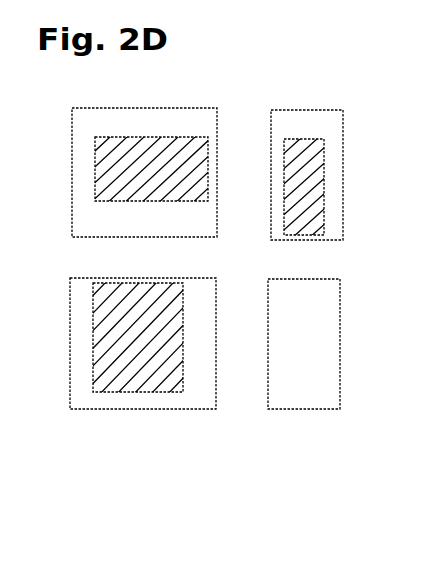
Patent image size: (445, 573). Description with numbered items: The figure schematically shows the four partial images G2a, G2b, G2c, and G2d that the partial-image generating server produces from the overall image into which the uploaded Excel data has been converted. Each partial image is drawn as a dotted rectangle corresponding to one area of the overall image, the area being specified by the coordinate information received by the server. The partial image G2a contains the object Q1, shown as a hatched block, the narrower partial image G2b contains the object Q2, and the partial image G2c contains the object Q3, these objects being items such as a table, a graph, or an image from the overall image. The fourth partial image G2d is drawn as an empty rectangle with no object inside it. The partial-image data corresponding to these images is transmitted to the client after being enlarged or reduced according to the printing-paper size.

The partial image G2a is at (160, 108).
The partial image G2b is at (322, 110).
The partial image G2c is at (195, 278).
The partial image G2d is at (323, 279).
The object Q1 is at (127, 190).
The object Q2 is at (318, 190).
The object Q3 is at (122, 392).